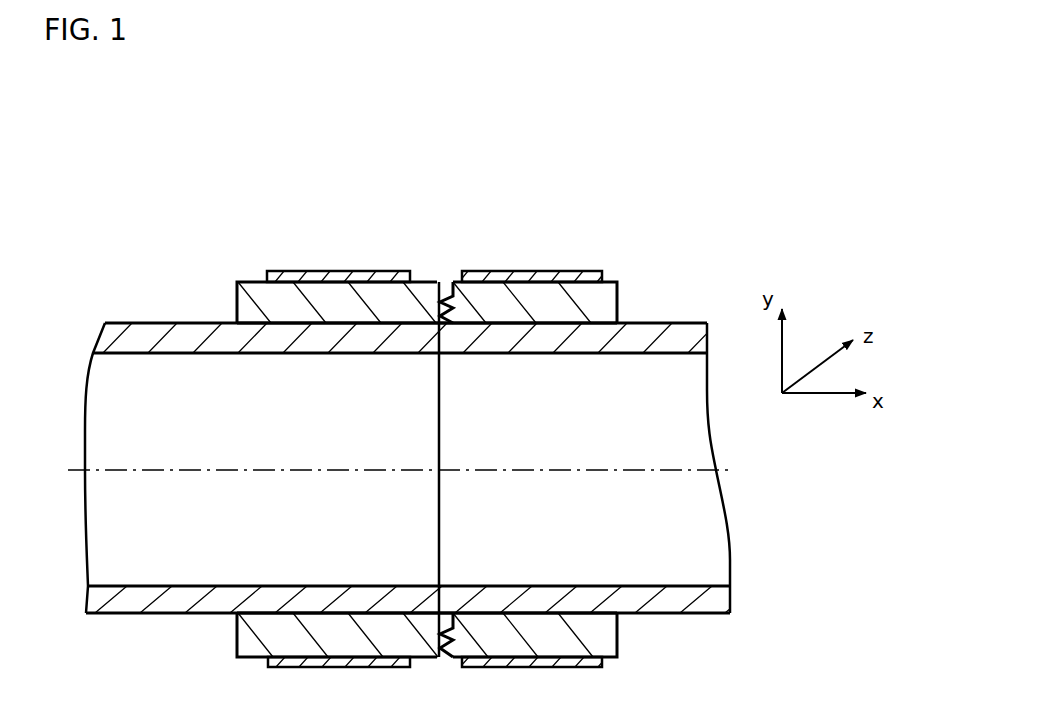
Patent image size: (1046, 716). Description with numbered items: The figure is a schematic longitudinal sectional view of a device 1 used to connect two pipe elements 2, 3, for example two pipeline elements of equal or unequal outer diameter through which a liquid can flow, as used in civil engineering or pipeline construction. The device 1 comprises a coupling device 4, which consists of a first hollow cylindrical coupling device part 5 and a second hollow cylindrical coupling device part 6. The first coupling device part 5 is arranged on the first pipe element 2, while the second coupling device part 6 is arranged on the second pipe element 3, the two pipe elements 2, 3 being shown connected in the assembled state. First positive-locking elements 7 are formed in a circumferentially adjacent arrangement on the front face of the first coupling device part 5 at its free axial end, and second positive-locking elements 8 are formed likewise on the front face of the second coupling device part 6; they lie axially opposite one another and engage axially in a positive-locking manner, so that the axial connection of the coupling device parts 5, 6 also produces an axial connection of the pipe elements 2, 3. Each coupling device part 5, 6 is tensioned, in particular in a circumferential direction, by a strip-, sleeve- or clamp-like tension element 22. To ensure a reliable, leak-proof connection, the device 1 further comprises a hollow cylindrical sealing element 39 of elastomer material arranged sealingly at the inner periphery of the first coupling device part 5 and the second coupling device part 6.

The device 1 is at (207, 183).
The first pipe element 2 is at (160, 322).
The second pipe element 3 is at (653, 322).
The coupling device 4 is at (475, 215).
The first coupling device part 5 is at (244, 275).
The second coupling device part 6 is at (619, 278).
The first positive-locking elements 7 is at (440, 275).
The second positive-locking elements 8 is at (448, 275).
The tension element 22 is at (348, 271).
The sealing element 39 is at (565, 322).